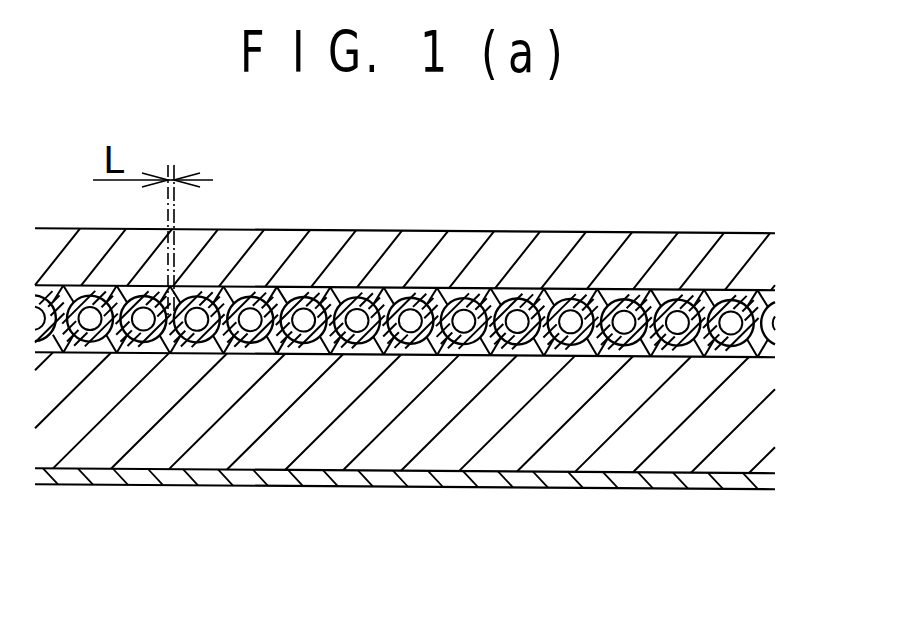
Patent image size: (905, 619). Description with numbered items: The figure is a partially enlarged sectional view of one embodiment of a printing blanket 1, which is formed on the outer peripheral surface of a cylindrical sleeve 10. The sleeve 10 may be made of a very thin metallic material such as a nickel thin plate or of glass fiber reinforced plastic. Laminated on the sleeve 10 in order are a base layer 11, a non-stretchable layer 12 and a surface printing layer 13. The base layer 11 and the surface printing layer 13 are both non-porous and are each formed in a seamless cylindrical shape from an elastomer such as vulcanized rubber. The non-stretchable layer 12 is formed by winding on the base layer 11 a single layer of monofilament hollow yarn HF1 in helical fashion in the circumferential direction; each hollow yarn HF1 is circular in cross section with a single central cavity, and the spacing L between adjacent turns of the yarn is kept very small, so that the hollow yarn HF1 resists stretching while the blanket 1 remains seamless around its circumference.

The printing blanket 1 is at (637, 187).
The sleeve 10 is at (521, 478).
The base layer 11 is at (780, 361).
The non-stretchable layer 12 is at (780, 291).
The surface printing layer 13 is at (780, 233).
The monofilament hollow yarn HF1 is at (292, 288).